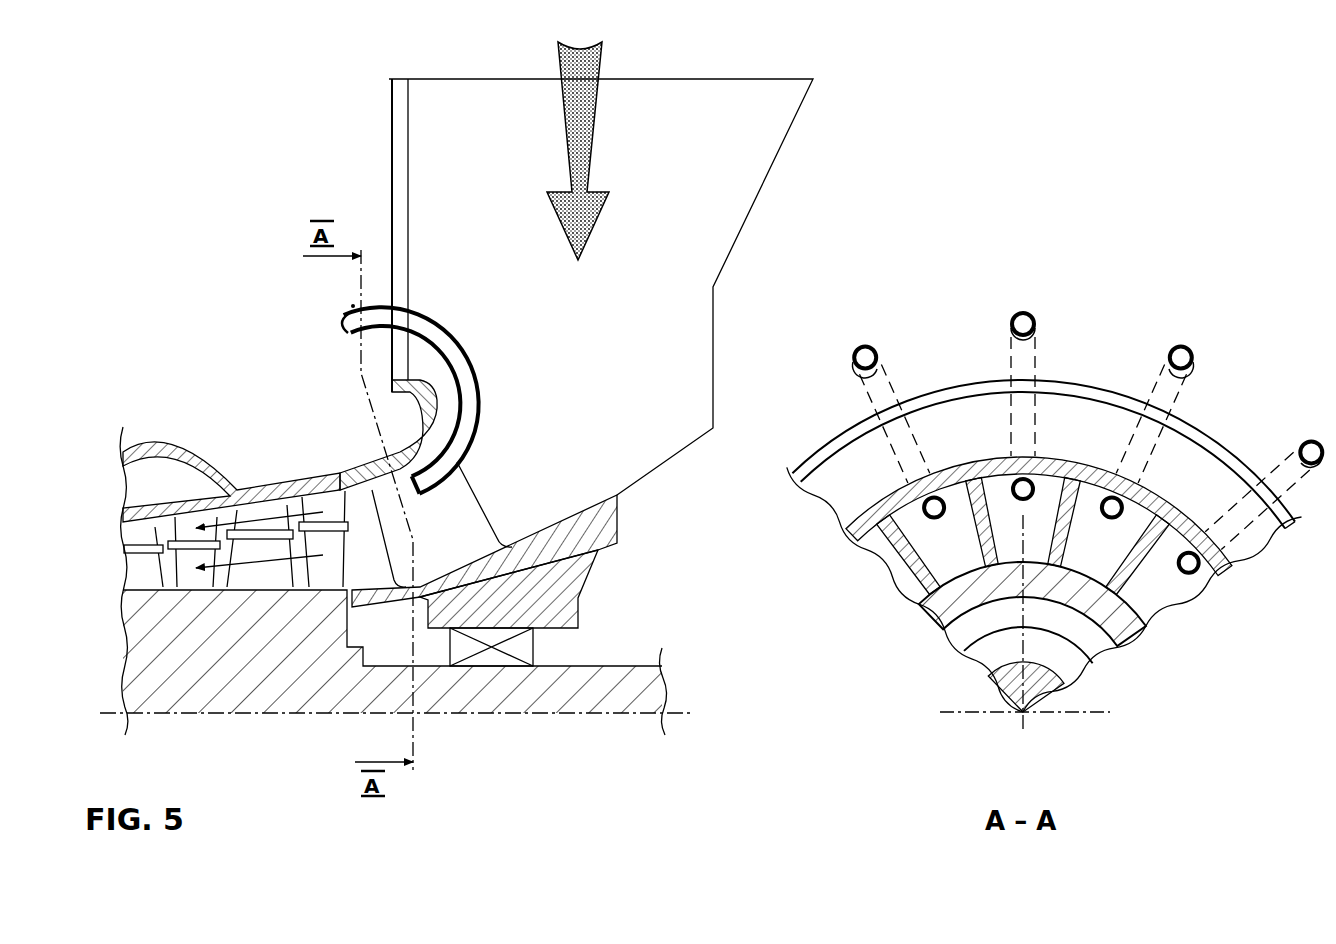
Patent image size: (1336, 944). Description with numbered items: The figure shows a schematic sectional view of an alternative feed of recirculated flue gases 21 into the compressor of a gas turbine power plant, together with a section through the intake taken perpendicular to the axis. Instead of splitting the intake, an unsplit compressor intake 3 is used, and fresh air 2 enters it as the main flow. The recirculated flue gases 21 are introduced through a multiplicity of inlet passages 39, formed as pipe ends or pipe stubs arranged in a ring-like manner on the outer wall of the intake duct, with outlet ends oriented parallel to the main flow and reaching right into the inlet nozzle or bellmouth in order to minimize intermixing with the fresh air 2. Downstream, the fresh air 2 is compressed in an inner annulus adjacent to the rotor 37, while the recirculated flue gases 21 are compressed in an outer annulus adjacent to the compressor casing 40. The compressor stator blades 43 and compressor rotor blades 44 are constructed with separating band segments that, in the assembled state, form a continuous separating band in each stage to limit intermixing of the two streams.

The fresh air 2 is at (578, 168).
The compressor intake 3 is at (754, 221).
The recirculated flue gas 21 is at (341, 323).
The rotor 37 is at (561, 694).
The inlet passage 39 is at (352, 305).
The compressor casing 40 is at (295, 492).
The compressor stator blade 43 is at (326, 573).
The compressor rotor blade 44 is at (263, 578).